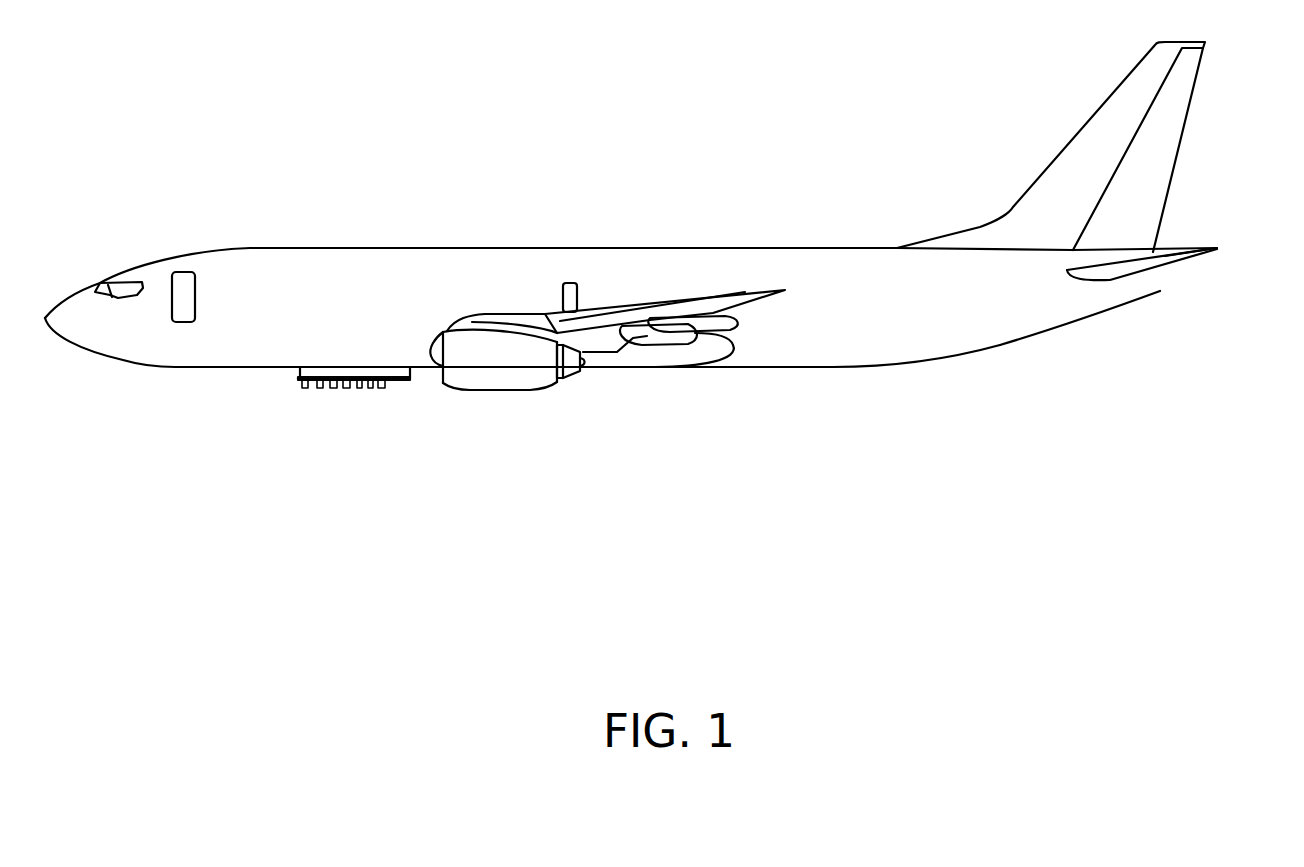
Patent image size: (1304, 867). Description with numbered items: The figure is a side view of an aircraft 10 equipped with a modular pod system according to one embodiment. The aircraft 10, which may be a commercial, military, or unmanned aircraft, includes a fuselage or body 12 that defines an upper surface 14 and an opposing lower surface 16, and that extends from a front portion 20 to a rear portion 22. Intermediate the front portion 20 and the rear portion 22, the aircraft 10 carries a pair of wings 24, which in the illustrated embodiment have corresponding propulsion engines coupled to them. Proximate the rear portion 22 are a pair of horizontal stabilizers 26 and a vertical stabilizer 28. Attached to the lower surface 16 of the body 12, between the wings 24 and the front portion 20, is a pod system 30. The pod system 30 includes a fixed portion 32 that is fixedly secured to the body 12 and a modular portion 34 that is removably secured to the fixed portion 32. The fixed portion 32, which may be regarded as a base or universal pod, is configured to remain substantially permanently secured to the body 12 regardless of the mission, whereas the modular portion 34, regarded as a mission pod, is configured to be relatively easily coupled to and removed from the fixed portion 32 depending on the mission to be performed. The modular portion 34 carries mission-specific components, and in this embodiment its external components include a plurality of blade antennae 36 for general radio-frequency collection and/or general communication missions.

The aircraft 10 is at (595, 230).
The body 12 is at (730, 257).
The upper surface 14 is at (472, 248).
The lower surface 16 is at (208, 368).
The front portion 20 is at (48, 318).
The rear portion 22 is at (1157, 288).
The wings 24 is at (632, 303).
The horizontal stabilizers 26 is at (1167, 257).
The vertical stabilizer 28 is at (1182, 108).
The pod system 30 is at (312, 392).
The fixed portion 32 is at (424, 376).
The modular portion 34 is at (414, 396).
The blade antennae 36 is at (352, 388).